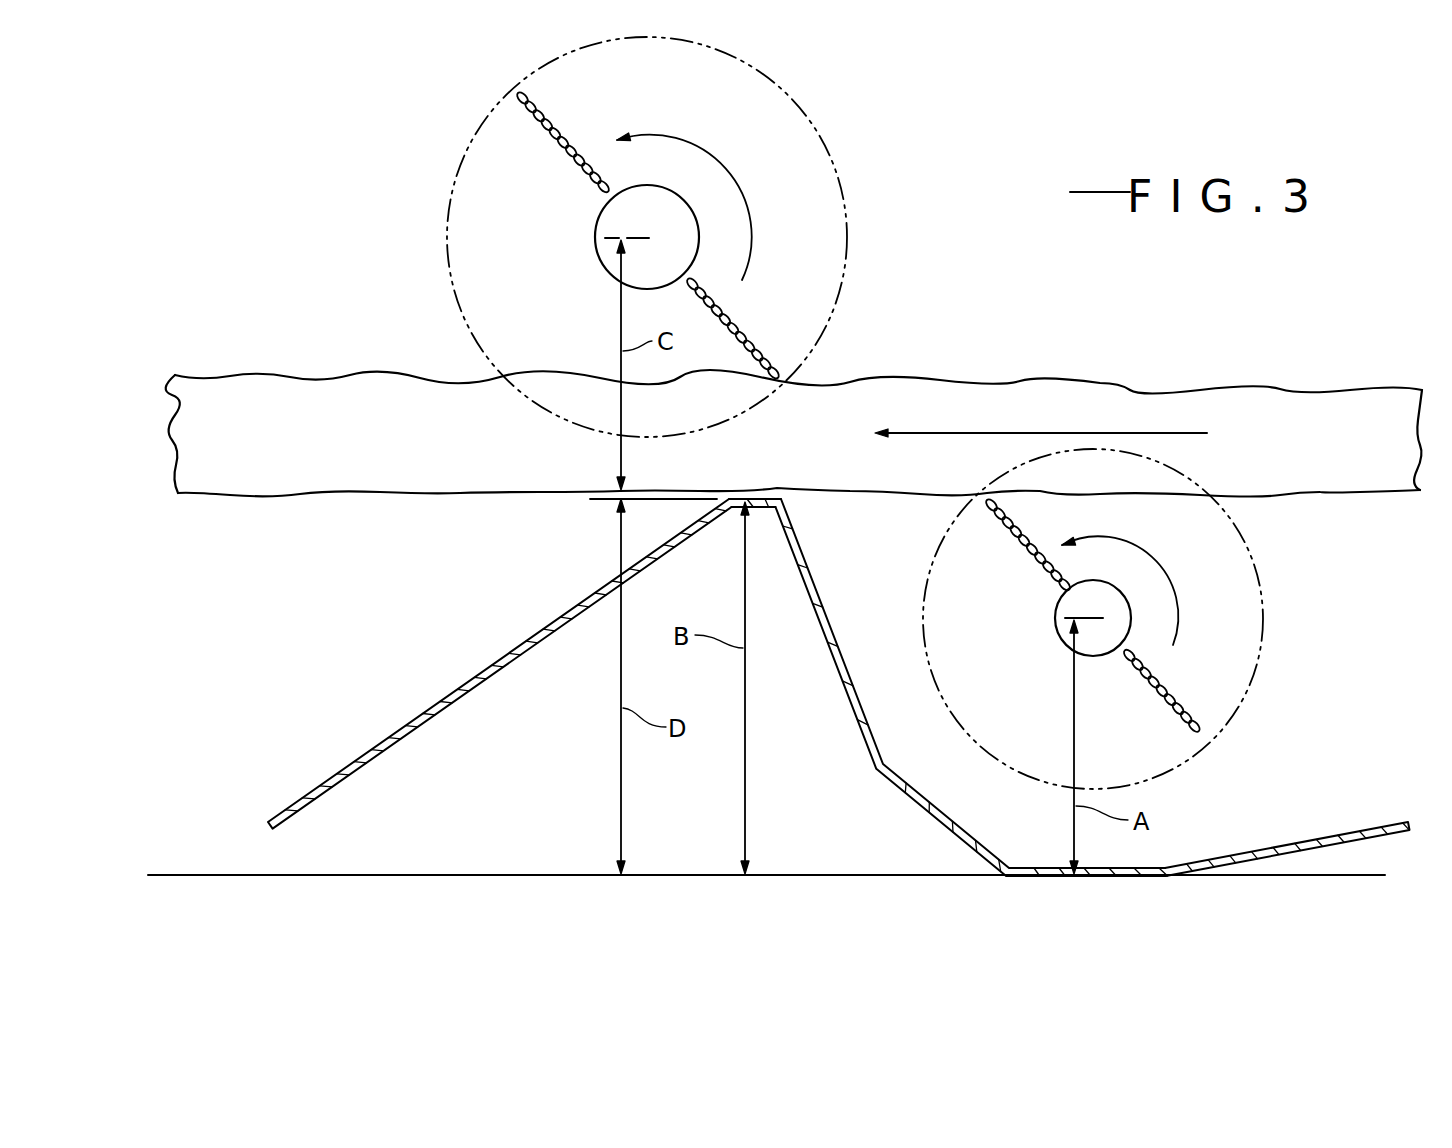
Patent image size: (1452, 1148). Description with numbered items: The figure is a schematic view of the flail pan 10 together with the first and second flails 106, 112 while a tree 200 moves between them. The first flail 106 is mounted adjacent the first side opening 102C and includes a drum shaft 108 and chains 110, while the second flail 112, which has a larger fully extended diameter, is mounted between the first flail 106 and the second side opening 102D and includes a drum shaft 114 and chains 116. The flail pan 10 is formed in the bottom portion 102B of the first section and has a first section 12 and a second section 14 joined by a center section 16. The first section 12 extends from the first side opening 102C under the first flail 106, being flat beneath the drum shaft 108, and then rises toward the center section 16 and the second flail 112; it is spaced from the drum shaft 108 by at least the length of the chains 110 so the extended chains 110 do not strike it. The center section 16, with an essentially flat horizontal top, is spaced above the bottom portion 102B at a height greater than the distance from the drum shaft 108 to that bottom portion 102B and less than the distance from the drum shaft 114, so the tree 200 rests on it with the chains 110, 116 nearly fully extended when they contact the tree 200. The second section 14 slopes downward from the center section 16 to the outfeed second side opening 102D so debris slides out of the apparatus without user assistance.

The flail pan 10 is at (842, 660).
The first section of the flail pan 12 is at (1333, 836).
The second section of the flail pan 14 is at (482, 668).
The center section of the flail pan 16 is at (783, 492).
The first flail 106 is at (1290, 608).
The drum shaft of the first flail 108 is at (1068, 606).
The chains of the first flail 110 is at (1150, 670).
The second flail 112 is at (852, 207).
The drum shaft of the second flail 114 is at (601, 258).
The chains of the second flail 116 is at (724, 308).
The tree 200 is at (1077, 383).
The bottom portion of the first section 102B is at (573, 876).
The first side opening 102C is at (1250, 355).
The second side opening 102D is at (338, 312).